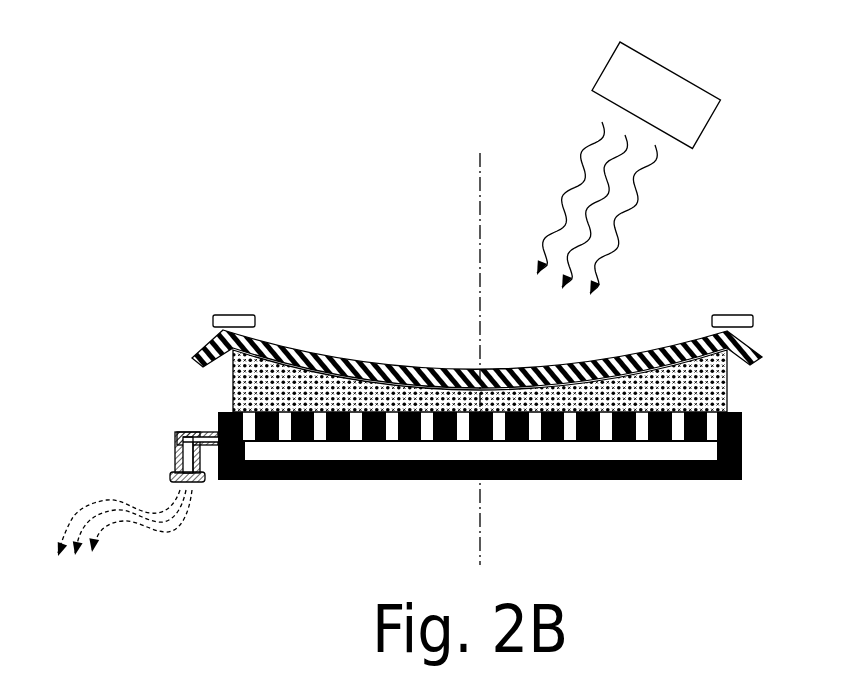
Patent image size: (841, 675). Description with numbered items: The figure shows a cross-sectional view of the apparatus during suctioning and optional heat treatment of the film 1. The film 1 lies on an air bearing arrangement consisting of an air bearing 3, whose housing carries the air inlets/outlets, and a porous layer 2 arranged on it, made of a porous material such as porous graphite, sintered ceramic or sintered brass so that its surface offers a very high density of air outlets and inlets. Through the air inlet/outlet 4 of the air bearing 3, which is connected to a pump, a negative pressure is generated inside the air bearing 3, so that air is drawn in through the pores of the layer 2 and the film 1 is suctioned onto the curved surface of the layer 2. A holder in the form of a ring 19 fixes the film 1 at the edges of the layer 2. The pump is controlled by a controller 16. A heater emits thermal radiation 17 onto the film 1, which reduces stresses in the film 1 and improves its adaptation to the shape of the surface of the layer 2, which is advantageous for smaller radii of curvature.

The film 1 is at (406, 380).
The porous layer 2 is at (252, 398).
The air bearing 3 is at (727, 442).
The air inlet/outlet 4 is at (178, 433).
The controller 16 is at (677, 75).
The thermal radiation 17 is at (573, 150).
The ring 19 is at (239, 316).